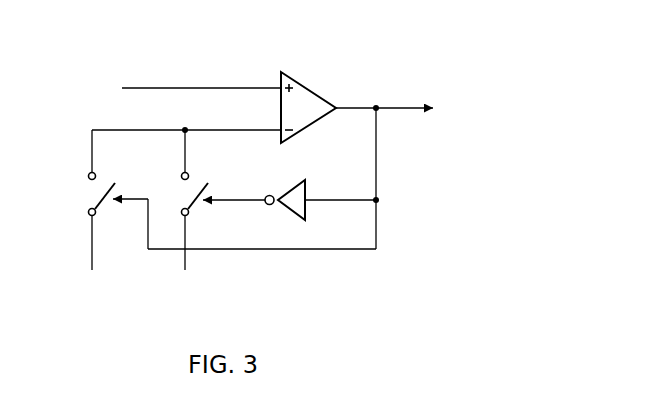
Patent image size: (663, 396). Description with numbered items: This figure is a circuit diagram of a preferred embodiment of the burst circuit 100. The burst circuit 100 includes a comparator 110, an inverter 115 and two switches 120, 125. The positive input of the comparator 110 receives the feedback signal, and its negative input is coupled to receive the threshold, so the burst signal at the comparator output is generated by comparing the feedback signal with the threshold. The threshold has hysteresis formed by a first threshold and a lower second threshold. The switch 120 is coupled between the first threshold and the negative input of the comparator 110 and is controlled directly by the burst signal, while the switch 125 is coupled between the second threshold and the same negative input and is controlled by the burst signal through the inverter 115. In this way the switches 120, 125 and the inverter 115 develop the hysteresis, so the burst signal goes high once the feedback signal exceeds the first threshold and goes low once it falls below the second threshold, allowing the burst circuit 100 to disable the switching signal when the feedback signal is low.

The burst circuit 100 is at (474, 27).
The comparator 110 is at (312, 104).
The inverter 115 is at (285, 191).
The switch 120 is at (113, 187).
The switch 125 is at (206, 187).